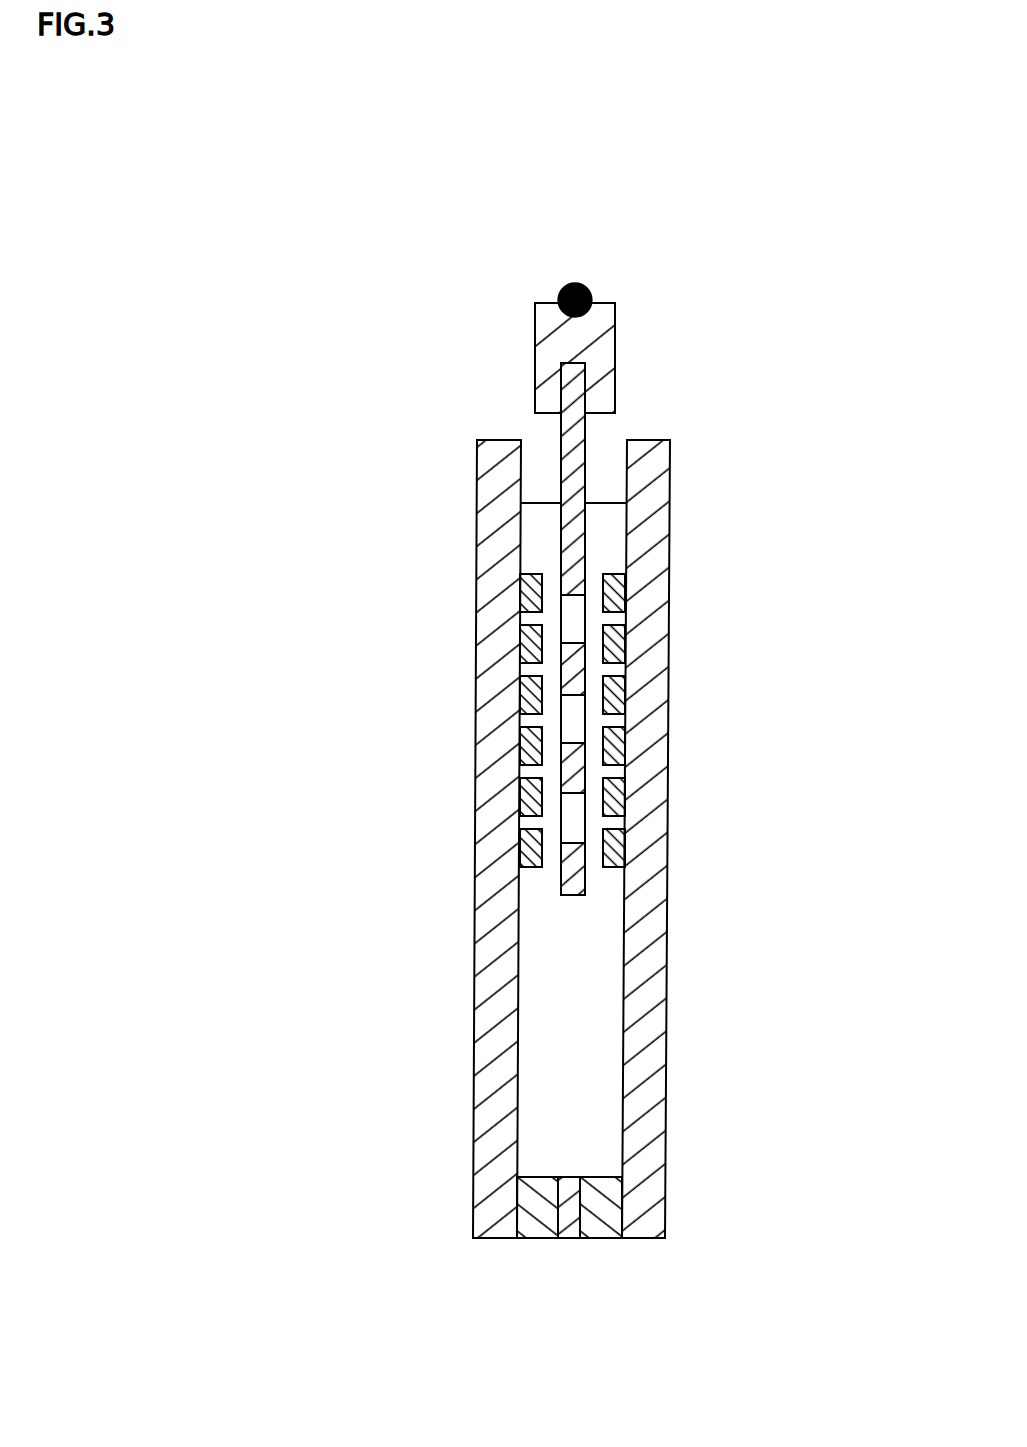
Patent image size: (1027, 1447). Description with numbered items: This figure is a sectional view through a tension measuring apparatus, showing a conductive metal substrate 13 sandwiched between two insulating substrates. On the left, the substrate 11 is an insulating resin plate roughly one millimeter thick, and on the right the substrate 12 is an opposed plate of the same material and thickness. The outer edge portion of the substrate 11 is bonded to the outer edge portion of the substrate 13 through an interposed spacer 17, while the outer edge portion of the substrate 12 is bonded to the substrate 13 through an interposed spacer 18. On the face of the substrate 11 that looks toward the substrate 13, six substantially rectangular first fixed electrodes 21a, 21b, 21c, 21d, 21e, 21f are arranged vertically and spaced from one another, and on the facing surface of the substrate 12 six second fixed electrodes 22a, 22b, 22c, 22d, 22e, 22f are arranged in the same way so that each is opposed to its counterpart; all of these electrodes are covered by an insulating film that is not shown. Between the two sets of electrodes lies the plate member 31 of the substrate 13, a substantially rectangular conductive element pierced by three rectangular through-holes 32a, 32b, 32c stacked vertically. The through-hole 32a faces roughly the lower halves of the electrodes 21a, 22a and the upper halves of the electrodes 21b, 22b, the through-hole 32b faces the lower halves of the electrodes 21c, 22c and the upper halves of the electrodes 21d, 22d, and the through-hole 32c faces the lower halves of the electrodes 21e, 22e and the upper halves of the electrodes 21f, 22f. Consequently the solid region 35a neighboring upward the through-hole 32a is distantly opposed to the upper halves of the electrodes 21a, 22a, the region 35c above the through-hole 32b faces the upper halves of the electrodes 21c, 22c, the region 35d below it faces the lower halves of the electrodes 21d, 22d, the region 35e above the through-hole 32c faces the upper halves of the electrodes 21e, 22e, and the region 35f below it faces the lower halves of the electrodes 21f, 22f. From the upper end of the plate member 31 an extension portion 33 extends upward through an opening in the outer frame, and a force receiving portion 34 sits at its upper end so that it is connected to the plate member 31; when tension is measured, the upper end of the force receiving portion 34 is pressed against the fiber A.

The substrate 11 is at (476, 500).
The substrate 12 is at (648, 472).
The substrate 13 is at (572, 1230).
The spacer 17 is at (535, 1232).
The spacer 18 is at (603, 1225).
The electrode 21a is at (520, 587).
The electrode 21b is at (520, 640).
The electrode 21c is at (520, 692).
The electrode 21d is at (520, 747).
The electrode 21e is at (520, 795).
The electrode 21f is at (522, 850).
The electrode 22a is at (618, 586).
The electrode 22b is at (618, 637).
The electrode 22c is at (618, 695).
The electrode 22d is at (618, 742).
The electrode 22e is at (618, 797).
The electrode 22f is at (618, 847).
The plate member 31 is at (587, 540).
The through-hole 32a is at (575, 643).
The through-hole 32b is at (575, 743).
The through-hole 32c is at (575, 843).
The extension portion 33 is at (587, 430).
The force receiving portion 34 is at (596, 316).
The region 35a is at (568, 597).
The region 35c is at (572, 686).
The region 35d is at (572, 748).
The region 35e is at (572, 790).
The region 35f is at (572, 852).
The fiber A is at (572, 287).